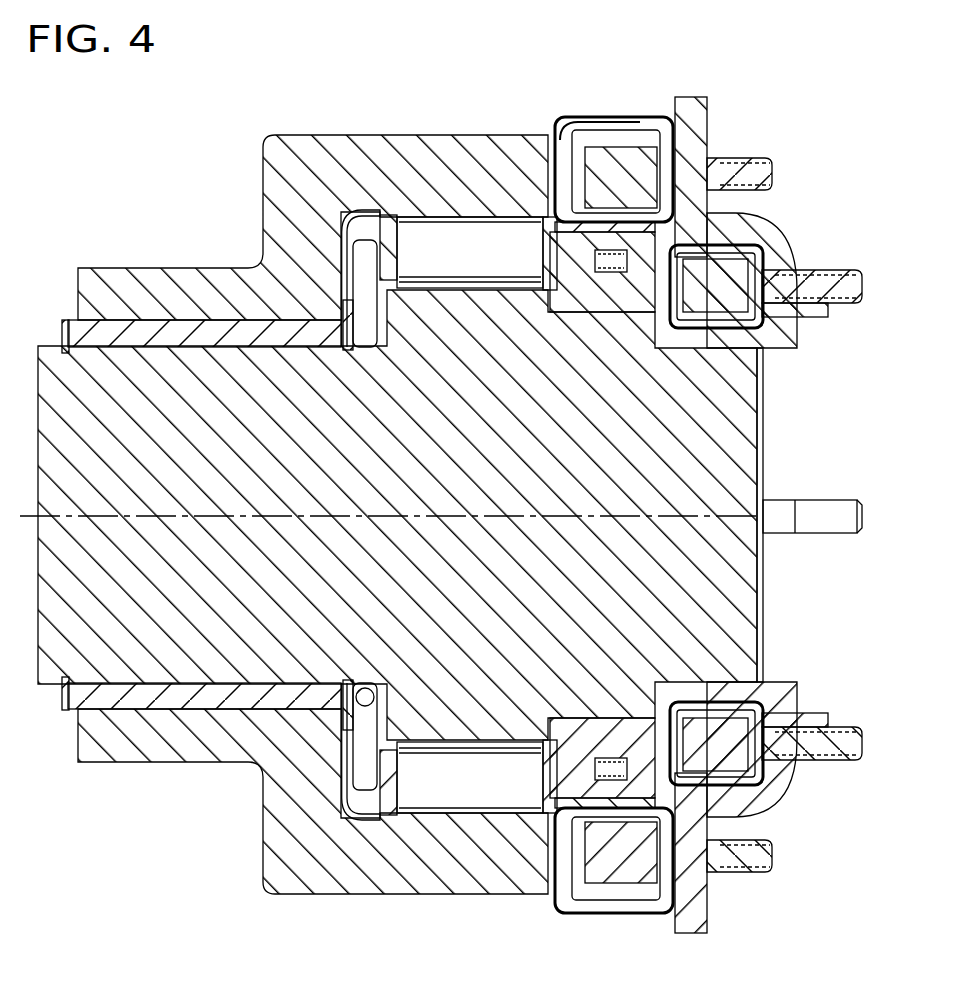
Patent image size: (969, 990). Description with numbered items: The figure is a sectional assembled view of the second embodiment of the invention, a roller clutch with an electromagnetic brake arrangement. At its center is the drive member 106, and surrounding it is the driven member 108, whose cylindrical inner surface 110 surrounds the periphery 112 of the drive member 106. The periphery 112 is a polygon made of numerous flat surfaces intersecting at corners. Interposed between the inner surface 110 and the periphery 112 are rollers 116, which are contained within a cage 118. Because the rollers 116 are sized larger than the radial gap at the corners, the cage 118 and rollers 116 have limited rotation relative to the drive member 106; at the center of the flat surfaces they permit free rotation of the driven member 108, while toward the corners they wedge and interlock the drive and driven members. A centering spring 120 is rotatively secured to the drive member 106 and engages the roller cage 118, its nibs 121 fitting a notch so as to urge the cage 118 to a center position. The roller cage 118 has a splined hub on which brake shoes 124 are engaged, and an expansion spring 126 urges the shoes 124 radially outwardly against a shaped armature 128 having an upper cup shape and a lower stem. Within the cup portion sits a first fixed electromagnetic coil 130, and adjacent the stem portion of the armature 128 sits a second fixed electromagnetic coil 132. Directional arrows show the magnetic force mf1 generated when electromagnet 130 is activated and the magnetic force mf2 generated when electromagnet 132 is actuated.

The drive member 106 is at (745, 458).
The driven member 108 is at (278, 192).
The inner surface 110 is at (398, 222).
The periphery 112 is at (497, 282).
The rollers 116 is at (457, 238).
The cage 118 is at (530, 258).
The centering spring 120 is at (372, 688).
The nibs 121 is at (367, 265).
The brake shoes 124 is at (565, 280).
The expansion spring 126 is at (628, 318).
The armature 128 is at (773, 173).
The first fixed electromagnetic coil 130 is at (632, 170).
The second fixed electromagnetic coil 132 is at (720, 283).
The magnetic force mf1 is at (598, 127).
The magnetic force mf2 is at (745, 340).